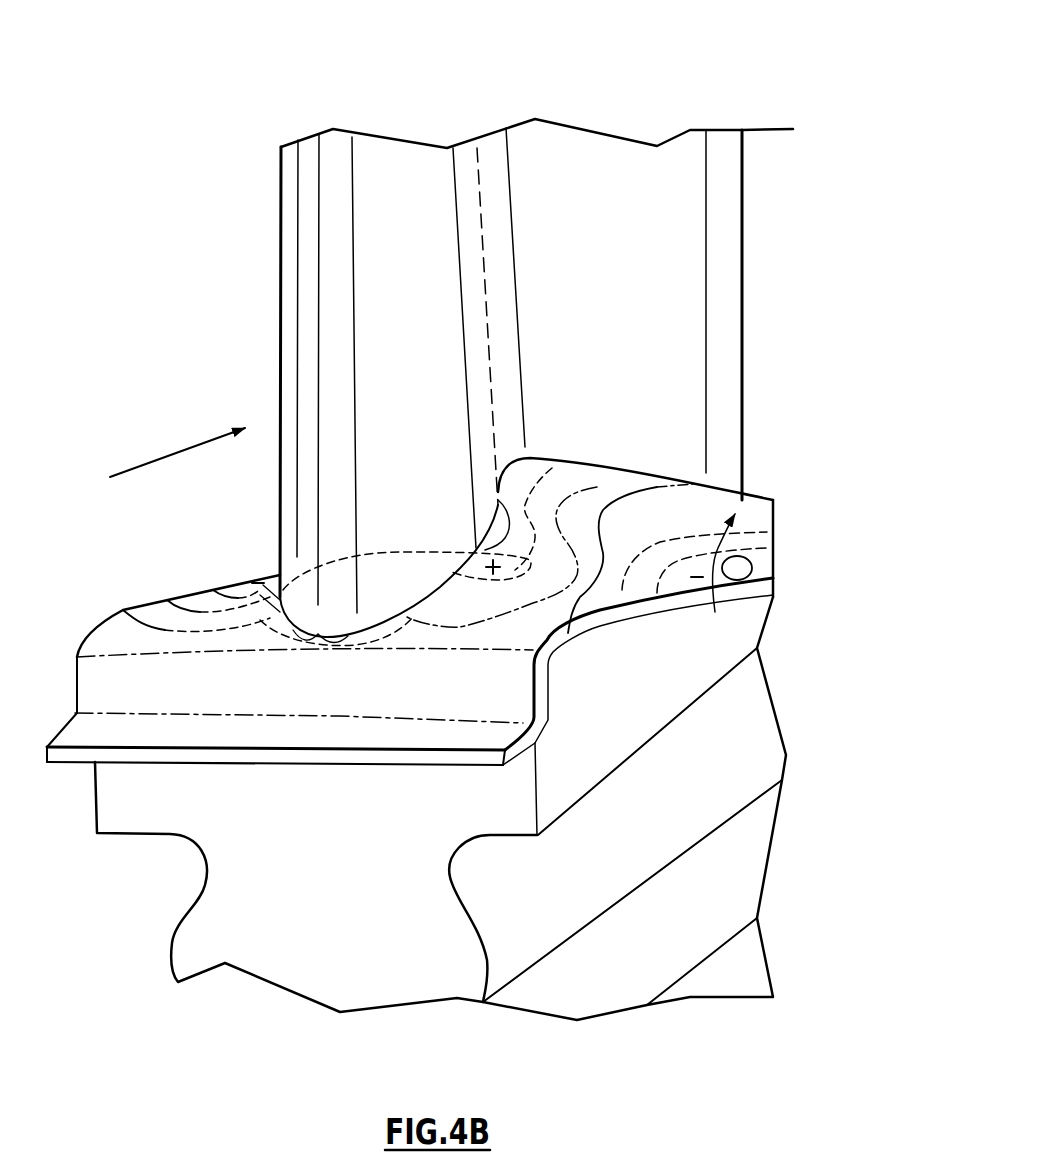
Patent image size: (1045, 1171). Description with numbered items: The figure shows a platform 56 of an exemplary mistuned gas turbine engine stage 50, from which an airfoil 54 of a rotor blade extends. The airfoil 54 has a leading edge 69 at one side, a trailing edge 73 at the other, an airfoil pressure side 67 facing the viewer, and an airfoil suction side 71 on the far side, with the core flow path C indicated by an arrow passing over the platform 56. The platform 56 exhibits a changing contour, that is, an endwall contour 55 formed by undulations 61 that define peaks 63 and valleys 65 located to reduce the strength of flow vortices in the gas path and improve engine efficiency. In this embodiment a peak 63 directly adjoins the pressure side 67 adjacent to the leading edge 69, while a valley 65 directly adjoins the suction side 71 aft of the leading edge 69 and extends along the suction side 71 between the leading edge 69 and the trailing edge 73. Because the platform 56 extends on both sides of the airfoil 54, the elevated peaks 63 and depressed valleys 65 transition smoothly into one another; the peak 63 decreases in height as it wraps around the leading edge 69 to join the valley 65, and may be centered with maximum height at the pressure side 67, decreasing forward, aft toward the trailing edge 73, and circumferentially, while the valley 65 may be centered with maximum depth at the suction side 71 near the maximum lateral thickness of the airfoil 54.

The stage 50 is at (150, 125).
The airfoil 54 is at (512, 358).
The airfoil suction side 71 is at (278, 245).
The trailing edge 73 is at (742, 305).
The airfoil pressure side 67 is at (628, 352).
The undulations 61 is at (633, 502).
The valley 65 is at (258, 600).
The peak 63 is at (492, 590).
The leading edge 69 is at (328, 615).
The platform 56 is at (420, 638).
The endwall contour 55 is at (517, 630).
The core flow path C is at (160, 462).